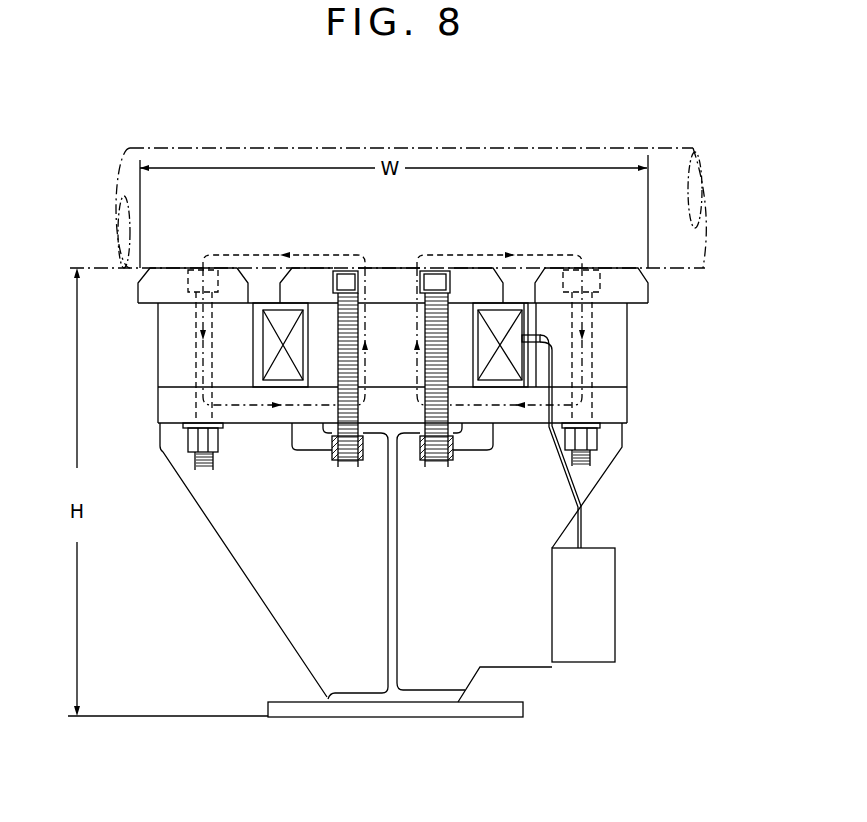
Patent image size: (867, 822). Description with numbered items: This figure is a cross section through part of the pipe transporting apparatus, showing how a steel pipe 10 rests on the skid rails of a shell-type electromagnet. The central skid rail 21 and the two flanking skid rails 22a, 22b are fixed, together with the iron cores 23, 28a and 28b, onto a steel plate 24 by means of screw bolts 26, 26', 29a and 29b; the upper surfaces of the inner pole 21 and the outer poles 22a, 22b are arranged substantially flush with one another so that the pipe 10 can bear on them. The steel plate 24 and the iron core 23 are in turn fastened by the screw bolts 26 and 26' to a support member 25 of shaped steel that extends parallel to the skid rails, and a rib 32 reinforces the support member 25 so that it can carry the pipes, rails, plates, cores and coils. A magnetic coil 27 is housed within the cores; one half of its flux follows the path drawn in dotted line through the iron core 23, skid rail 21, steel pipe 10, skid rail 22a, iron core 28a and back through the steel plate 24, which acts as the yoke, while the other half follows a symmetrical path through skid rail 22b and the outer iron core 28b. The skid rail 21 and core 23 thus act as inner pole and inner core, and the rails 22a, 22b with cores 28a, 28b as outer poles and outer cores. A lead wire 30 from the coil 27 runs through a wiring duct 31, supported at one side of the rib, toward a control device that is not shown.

The steel pipe 10 is at (685, 273).
The skid rail 21 is at (316, 267).
The skid rail 22a is at (170, 267).
The skid rail 22b is at (557, 266).
The iron core 23 is at (323, 378).
The steel plate 24 is at (630, 405).
The support member 25 is at (397, 582).
The screw bolt 26 is at (356, 402).
The screw bolt 26' is at (454, 392).
The magnetic coil 27 is at (283, 374).
The iron core 28a is at (172, 364).
The iron core 28b is at (628, 358).
The screw bolt 29a is at (198, 470).
The screw bolt 29b is at (590, 463).
The lead wire 30 is at (587, 518).
The wiring duct 31 is at (615, 605).
The rib 32 is at (287, 647).